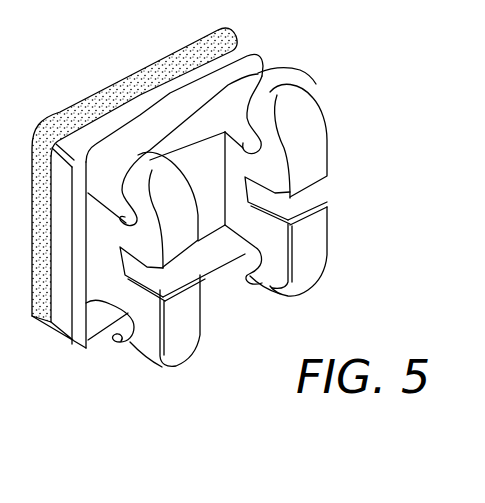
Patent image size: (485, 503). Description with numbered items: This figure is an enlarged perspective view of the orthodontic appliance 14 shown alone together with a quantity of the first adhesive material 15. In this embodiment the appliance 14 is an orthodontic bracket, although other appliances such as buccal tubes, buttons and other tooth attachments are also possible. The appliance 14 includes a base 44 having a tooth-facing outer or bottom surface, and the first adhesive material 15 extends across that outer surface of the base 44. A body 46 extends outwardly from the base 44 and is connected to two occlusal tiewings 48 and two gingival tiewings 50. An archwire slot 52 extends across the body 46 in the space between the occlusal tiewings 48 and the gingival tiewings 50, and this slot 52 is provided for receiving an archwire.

The appliance 14 is at (335, 136).
The first adhesive material 15 is at (168, 68).
The base 44 is at (232, 50).
The body 46 is at (105, 266).
The occlusal tiewings 48 is at (276, 94).
The gingival tiewings 50 is at (168, 357).
The archwire slot 52 is at (300, 208).